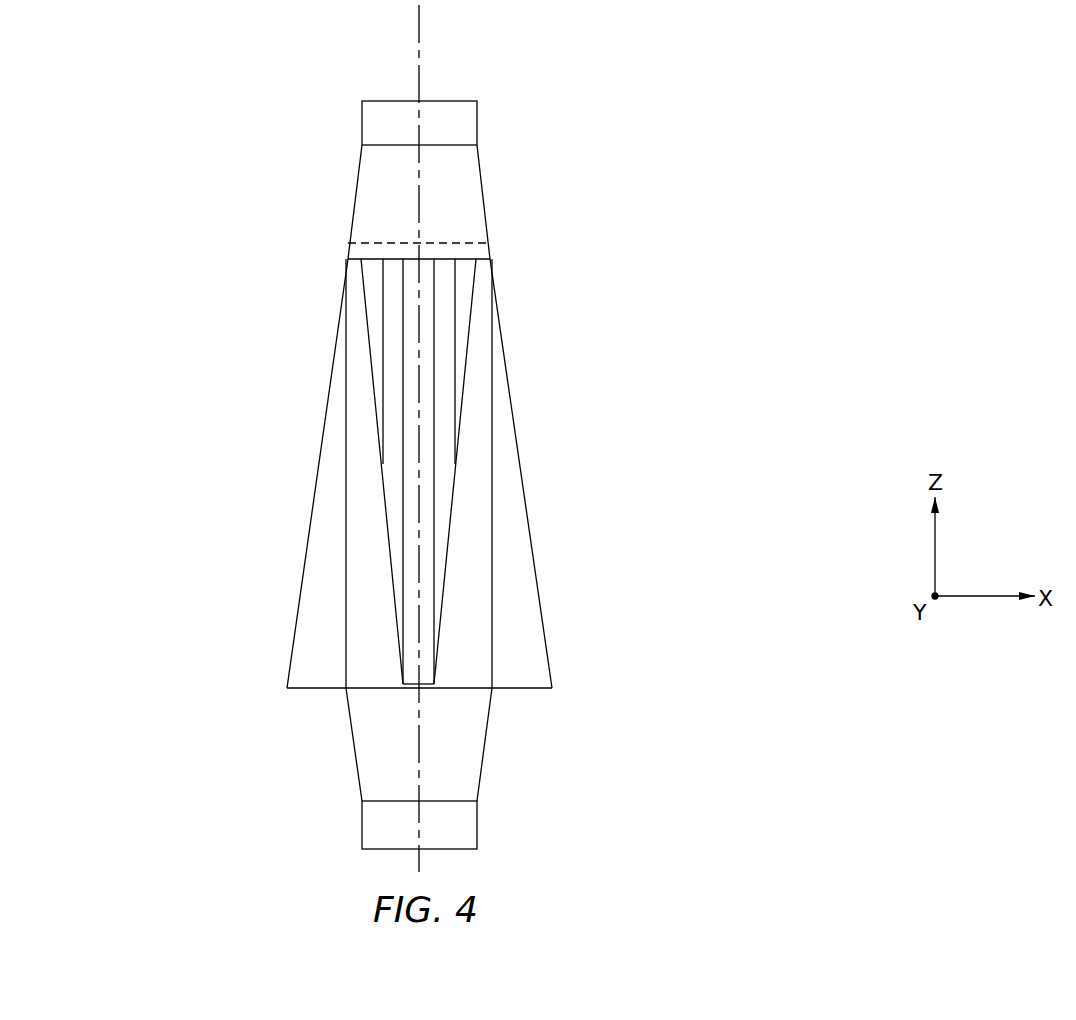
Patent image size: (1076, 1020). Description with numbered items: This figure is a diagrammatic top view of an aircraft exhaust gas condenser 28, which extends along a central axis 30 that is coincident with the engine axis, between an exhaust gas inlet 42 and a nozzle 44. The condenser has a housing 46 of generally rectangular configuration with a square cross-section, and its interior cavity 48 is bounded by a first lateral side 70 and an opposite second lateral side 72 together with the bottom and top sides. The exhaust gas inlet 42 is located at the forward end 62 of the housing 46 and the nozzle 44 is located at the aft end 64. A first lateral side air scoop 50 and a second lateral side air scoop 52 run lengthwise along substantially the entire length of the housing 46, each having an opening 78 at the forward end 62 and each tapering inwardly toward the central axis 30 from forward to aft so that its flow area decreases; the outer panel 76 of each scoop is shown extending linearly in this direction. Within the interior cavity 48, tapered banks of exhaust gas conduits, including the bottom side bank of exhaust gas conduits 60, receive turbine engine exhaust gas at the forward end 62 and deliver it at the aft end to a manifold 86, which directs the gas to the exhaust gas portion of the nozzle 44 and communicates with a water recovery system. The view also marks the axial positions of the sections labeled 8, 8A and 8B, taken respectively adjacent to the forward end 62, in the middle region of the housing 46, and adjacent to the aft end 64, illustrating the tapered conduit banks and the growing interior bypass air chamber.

The exhaust gas condenser 28 is at (496, 475).
The central axis 30 is at (419, 50).
The exhaust gas inlet 42 is at (455, 768).
The nozzle 44 is at (328, 163).
The housing 46 is at (422, 443).
The interior cavity 48 is at (470, 658).
The first lateral side air scoop 50 is at (292, 568).
The second lateral side air scoop 52 is at (552, 582).
The bottom side bank of exhaust gas conduits 60 is at (445, 272).
The forward end 62 is at (348, 676).
The aft end 64 is at (492, 258).
The first lateral side 70 is at (346, 512).
The second lateral side 72 is at (493, 530).
The outer panel 76 is at (422, 473).
The opening 78 is at (333, 698).
The manifold 86 is at (392, 243).
The section line 8 is at (280, 672).
The section line 8A is at (309, 440).
The section line 8B is at (327, 270).